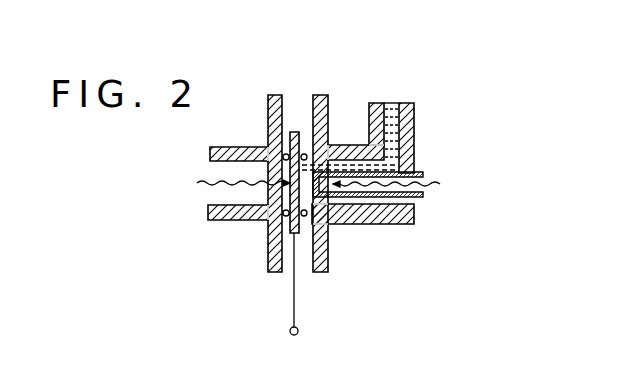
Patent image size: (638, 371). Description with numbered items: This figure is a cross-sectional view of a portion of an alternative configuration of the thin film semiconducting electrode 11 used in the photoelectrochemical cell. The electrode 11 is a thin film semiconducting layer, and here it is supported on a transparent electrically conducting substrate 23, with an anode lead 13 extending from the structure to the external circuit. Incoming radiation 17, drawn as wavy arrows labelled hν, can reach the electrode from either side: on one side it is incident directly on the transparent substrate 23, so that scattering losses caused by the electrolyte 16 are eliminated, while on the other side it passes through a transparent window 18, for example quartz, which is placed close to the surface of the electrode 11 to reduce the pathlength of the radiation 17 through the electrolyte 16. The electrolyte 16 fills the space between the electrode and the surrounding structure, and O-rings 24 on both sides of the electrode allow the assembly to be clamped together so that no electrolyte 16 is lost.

The thin film semiconducting electrode 11 is at (296, 131).
The anode lead 13 is at (298, 328).
The electrolyte 16 is at (392, 130).
The incoming radiation 17 is at (202, 186).
The transparent window 18 is at (320, 182).
The transparent electrically conducting substrate 23 is at (288, 223).
The O-rings 24 is at (284, 155).